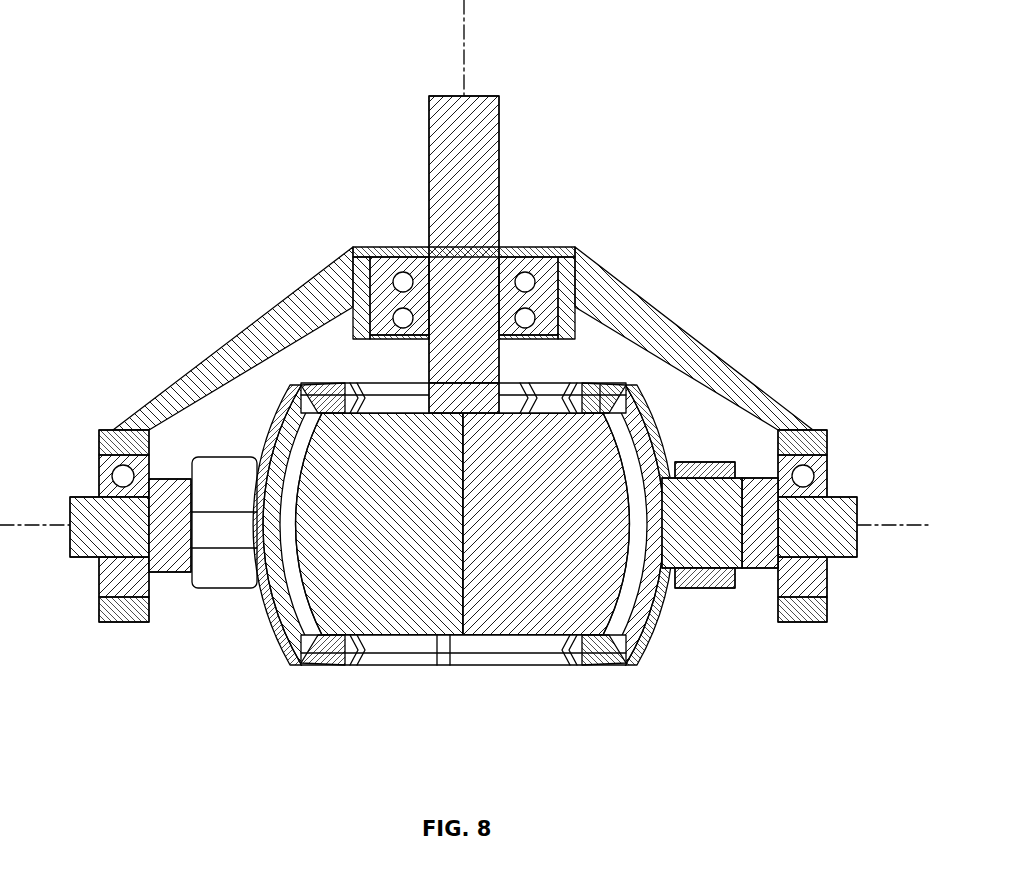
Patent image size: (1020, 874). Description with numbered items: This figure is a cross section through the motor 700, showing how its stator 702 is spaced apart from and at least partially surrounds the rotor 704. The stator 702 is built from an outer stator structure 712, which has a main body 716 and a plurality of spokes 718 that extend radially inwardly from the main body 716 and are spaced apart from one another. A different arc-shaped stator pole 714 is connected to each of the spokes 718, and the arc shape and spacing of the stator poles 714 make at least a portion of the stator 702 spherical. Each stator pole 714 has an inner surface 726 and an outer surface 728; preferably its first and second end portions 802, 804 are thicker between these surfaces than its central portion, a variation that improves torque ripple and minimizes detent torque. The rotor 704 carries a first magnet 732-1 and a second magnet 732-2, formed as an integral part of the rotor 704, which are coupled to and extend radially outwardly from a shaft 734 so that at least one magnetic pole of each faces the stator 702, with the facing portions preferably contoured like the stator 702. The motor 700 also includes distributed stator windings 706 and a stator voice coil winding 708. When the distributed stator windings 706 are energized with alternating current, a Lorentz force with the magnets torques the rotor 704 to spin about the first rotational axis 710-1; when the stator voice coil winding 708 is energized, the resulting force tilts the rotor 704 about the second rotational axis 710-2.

The motor 700 is at (465, 371).
The stator 702 is at (652, 432).
The rotor 704 is at (552, 403).
The distributed stator windings 706 is at (229, 446).
The stator voice coil winding 708 is at (662, 392).
The first rotational axis 710-1 is at (472, 30).
The second rotational axis 710-2 is at (878, 520).
The outer stator structure 712 is at (750, 580).
The arc-shaped stator poles 714 is at (308, 408).
The main body 716 is at (165, 547).
The spokes 718 is at (726, 535).
The inner surface 726 is at (333, 642).
The outer surface 728 is at (265, 574).
The first magnet 732-1 is at (414, 535).
The second magnet 732-2 is at (588, 535).
The shaft 734 is at (490, 176).
The first end portion 802 is at (612, 403).
The second end portion 804 is at (617, 643).